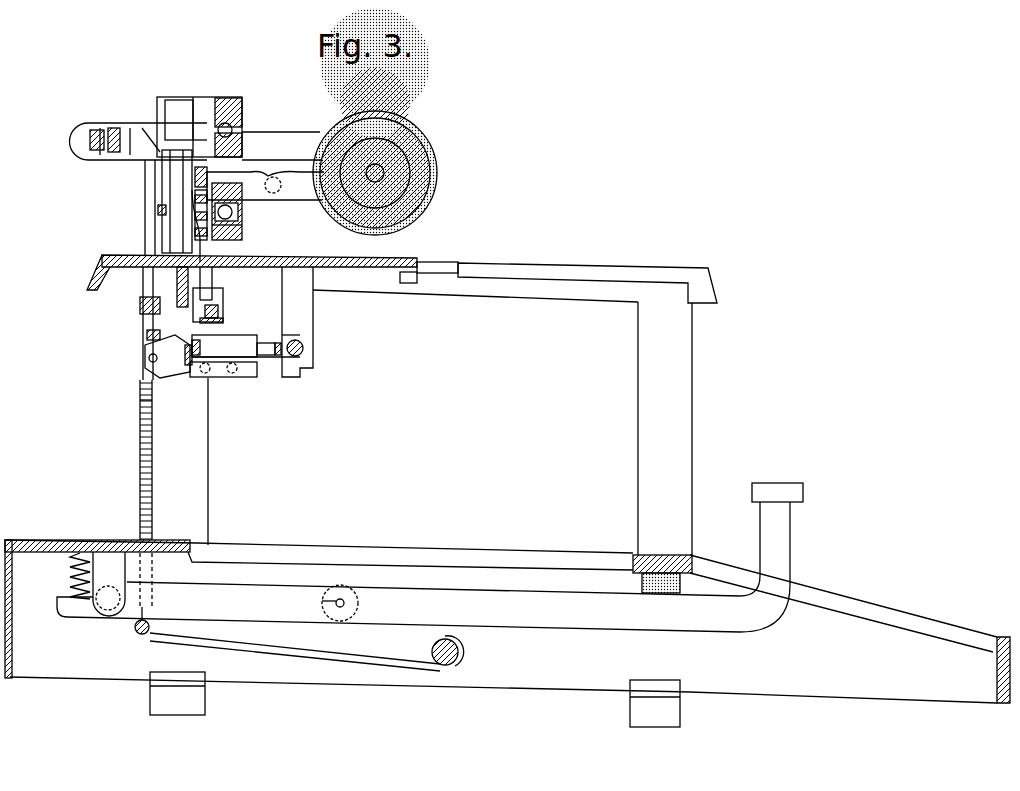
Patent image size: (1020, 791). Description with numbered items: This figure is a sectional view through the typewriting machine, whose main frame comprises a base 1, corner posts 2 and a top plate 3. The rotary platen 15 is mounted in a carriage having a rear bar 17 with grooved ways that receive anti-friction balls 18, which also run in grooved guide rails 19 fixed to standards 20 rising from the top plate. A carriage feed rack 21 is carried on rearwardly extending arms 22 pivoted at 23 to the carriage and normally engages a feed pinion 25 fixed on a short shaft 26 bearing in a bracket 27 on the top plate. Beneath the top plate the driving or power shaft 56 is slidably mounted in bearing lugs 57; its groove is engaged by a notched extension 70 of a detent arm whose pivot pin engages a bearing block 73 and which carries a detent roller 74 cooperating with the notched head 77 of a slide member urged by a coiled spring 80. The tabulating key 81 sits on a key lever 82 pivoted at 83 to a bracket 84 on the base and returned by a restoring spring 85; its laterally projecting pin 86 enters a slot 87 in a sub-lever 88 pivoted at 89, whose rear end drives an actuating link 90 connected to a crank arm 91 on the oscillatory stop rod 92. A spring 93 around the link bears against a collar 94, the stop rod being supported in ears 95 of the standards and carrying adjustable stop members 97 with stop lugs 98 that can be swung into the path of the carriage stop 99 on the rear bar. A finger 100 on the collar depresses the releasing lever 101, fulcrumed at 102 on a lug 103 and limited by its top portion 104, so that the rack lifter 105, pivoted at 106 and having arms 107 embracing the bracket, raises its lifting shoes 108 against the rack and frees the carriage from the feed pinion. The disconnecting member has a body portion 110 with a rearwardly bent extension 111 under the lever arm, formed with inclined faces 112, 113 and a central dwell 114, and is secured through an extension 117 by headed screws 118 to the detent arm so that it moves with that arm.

The base 1 is at (557, 670).
The corner posts 2 is at (348, 441).
The top plate 3 is at (575, 263).
The rotary platen 15 is at (388, 115).
The rear bar 17 is at (232, 152).
The anti-friction balls 18 is at (233, 126).
The grooved guide rails 19 is at (229, 98).
The standards 20 is at (173, 97).
The carriage feed rack 21 is at (195, 141).
The rearwardly extending arms 22 is at (255, 177).
The pivot 23 is at (281, 186).
The feed pinion 25 is at (195, 212).
The short shaft 26 is at (158, 208).
The bracket 27 is at (172, 195).
The driving shaft 56 is at (304, 348).
The bearing lugs 57 is at (292, 320).
The notched extension 70 is at (300, 377).
The bearing block 73 is at (224, 347).
The detent roller 74 is at (279, 343).
The head 77 is at (265, 343).
The coiled spring 80 is at (260, 358).
The tabulating key 81 is at (765, 483).
The key lever 82 is at (423, 567).
The pivot 83 is at (110, 612).
The bracket 84 is at (105, 552).
The restoring spring 85 is at (68, 575).
The laterally projecting pin 86 is at (322, 601).
The slot 87 is at (350, 603).
The sub-lever 88 is at (333, 657).
The pivot 89 is at (459, 651).
The actuating link 90 is at (154, 480).
The crank arm 91 is at (141, 128).
The stop rod 92 is at (84, 125).
The spring 93 is at (153, 397).
The collar 94 is at (140, 305).
The ears 95 is at (130, 128).
The stop members 97 is at (100, 128).
The stop lugs 98 is at (114, 128).
The carriage stop 99 is at (180, 132).
The finger 100 is at (177, 300).
The releasing lever 101 is at (223, 320).
The fulcrum 102 is at (218, 306).
The lug 103 is at (240, 256).
The top portion 104 is at (160, 272).
The rack lifter 105 is at (212, 285).
The pivot 106 is at (214, 300).
The arms 107 is at (242, 229).
The lifting shoes 108 is at (207, 177).
The body portion 110 is at (188, 366).
The rearwardly bent extension 111 is at (145, 352).
The inclined face 112 is at (202, 345).
The inclined face 113 is at (147, 334).
The central dwell 114 is at (151, 361).
The extension 117 is at (233, 376).
The headed screws 118 is at (205, 375).